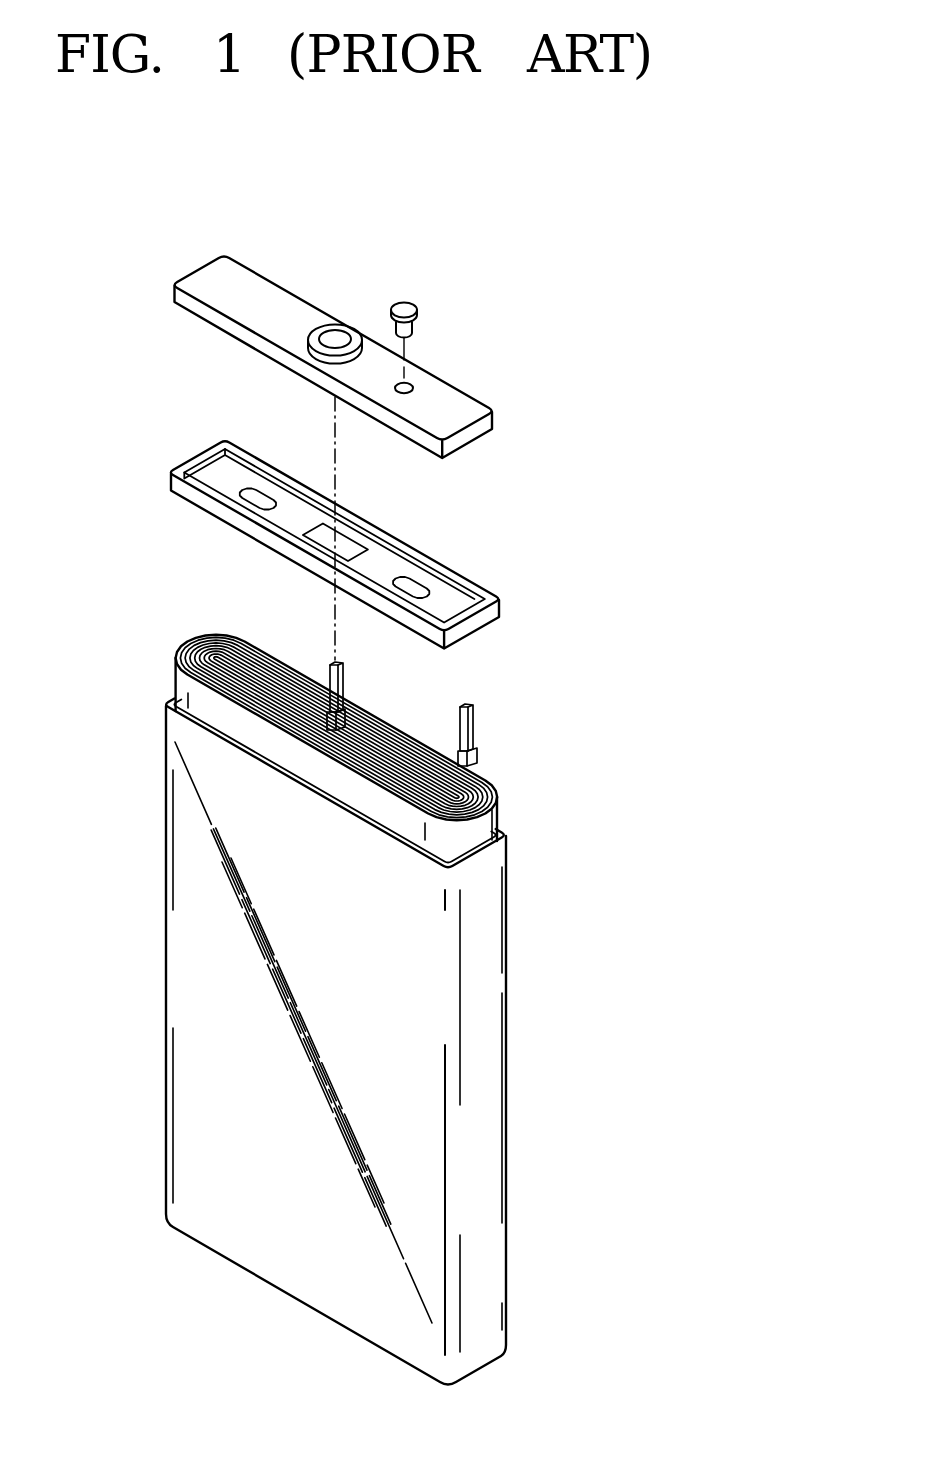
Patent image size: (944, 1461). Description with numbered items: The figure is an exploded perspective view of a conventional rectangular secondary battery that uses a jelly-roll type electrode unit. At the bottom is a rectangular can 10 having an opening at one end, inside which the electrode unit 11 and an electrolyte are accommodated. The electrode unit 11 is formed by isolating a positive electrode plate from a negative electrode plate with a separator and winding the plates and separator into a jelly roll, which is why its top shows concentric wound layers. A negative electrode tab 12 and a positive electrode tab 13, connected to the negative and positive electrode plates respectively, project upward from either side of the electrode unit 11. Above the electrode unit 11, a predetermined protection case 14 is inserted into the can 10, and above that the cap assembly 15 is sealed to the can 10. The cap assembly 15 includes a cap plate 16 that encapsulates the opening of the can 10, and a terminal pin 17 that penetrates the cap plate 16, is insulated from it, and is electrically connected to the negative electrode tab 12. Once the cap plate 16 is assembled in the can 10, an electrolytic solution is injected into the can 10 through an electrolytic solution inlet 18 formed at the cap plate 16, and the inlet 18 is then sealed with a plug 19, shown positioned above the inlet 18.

The rectangular can 10 is at (492, 918).
The electrode unit 11 is at (212, 718).
The negative electrode tab 12 is at (331, 663).
The positive electrode tab 13 is at (473, 705).
The protection case 14 is at (489, 594).
The cap assembly 15 is at (349, 330).
The cap plate 16 is at (467, 407).
The terminal pin 17 is at (334, 340).
The electrolytic solution inlet 18 is at (406, 386).
The plug 19 is at (410, 306).